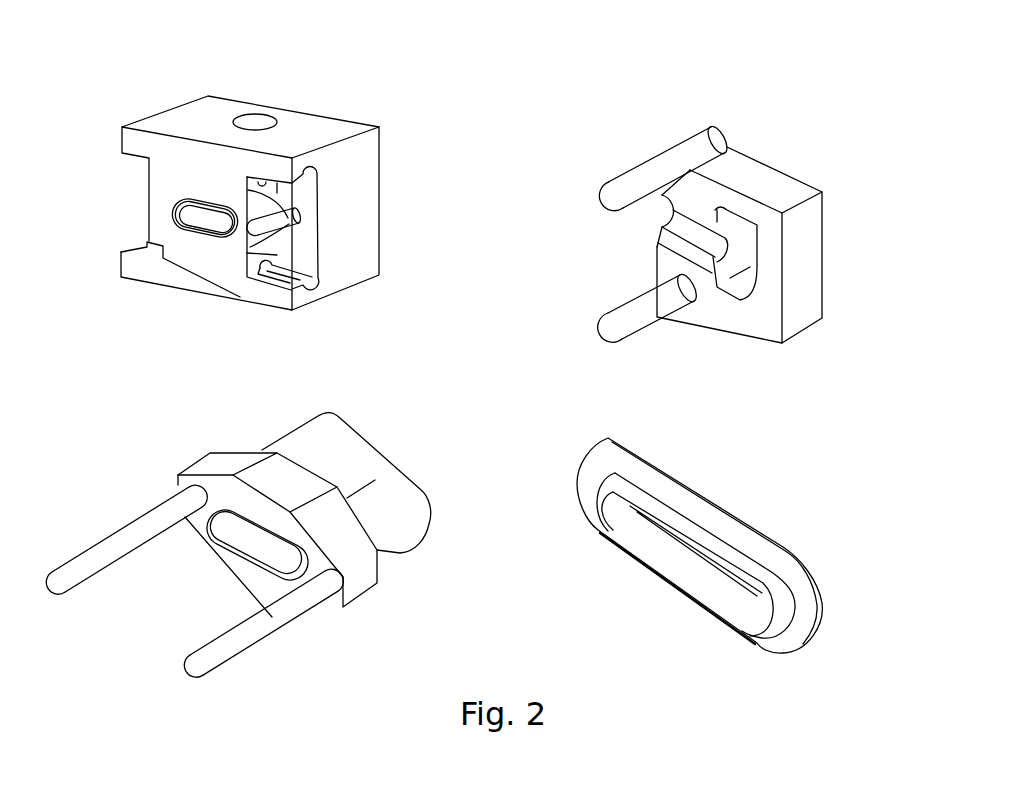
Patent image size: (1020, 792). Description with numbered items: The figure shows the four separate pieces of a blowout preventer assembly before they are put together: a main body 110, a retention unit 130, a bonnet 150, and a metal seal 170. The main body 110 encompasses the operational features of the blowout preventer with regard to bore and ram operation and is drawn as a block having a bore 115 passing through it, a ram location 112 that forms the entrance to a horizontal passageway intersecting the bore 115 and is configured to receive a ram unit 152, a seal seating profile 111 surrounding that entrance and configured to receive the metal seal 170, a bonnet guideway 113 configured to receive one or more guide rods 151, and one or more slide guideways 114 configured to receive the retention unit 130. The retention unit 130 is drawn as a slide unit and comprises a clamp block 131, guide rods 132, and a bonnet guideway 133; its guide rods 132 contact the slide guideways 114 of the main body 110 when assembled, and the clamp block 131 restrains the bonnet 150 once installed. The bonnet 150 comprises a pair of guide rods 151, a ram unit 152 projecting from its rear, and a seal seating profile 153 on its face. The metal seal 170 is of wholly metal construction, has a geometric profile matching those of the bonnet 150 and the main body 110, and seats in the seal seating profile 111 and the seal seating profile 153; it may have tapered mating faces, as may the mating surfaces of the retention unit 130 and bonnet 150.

The main body 110 is at (298, 70).
The seal seating profile 111 is at (172, 220).
The ram location 112 is at (208, 223).
The bonnet guideway 113 is at (272, 226).
The slide guideway 114 is at (306, 288).
The bore 115 is at (276, 120).
The retention unit 130 is at (742, 82).
The clamp block 131 is at (821, 204).
The guide rods 132 is at (643, 162).
The bonnet guideway 133 is at (672, 215).
The bonnet 150 is at (370, 407).
The guide rods 151 is at (105, 535).
The ram unit 152 is at (395, 452).
The seal seating profile 153 is at (242, 545).
The metal seal 170 is at (725, 477).